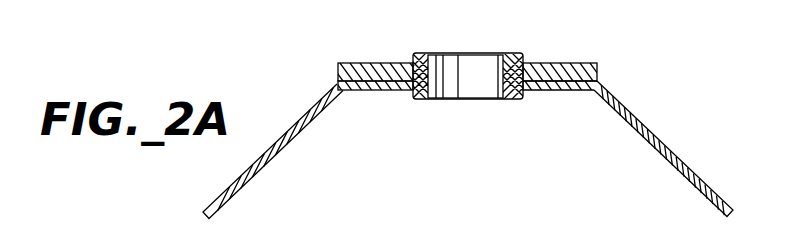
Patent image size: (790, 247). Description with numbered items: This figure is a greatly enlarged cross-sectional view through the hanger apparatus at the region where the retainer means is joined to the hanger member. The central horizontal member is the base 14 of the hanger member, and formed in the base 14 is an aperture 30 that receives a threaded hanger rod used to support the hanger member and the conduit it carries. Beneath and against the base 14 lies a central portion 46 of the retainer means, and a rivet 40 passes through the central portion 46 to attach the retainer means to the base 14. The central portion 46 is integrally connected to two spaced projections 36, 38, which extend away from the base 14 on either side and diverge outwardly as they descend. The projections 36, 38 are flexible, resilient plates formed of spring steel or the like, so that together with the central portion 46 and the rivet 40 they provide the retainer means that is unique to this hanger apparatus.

The base 14 is at (540, 70).
The aperture 30 is at (487, 70).
The rivet 40 is at (421, 95).
The central portion 46 is at (402, 93).
The projection 36 is at (222, 190).
The projection 38 is at (683, 160).